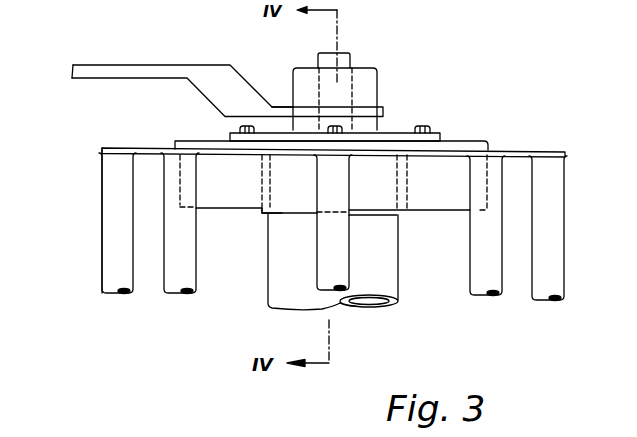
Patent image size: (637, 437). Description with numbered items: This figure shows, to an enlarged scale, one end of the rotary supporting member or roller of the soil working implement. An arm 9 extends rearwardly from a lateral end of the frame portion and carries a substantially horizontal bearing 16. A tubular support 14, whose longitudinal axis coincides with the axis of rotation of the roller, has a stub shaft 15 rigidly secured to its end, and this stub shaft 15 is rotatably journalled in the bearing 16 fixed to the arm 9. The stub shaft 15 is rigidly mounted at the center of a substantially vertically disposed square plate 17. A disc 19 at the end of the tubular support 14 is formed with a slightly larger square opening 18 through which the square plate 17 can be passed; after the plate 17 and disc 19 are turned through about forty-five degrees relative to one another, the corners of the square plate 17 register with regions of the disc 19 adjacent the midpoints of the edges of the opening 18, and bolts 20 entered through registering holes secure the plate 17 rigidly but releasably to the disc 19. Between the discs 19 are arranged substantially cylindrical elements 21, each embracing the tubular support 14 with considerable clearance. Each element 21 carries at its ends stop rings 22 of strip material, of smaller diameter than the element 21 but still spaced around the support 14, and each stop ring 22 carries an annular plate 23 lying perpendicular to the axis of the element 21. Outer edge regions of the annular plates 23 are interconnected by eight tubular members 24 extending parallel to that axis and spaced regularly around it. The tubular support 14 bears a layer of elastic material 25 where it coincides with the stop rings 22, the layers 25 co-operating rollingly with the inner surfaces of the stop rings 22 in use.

The arm 9 is at (138, 66).
The tubular support 14 is at (276, 278).
The stub shaft 15 is at (346, 55).
The bearing 16 is at (370, 80).
The square plate 17 is at (388, 132).
The square opening 18 is at (293, 158).
The disc 19 is at (194, 126).
The bolt 20 is at (418, 127).
The cylindrical element 21 is at (102, 192).
The stop ring 22 is at (231, 200).
The annular plate 23 is at (143, 147).
The tubular member 24 is at (108, 251).
The layer of elastic material 25 is at (282, 212).